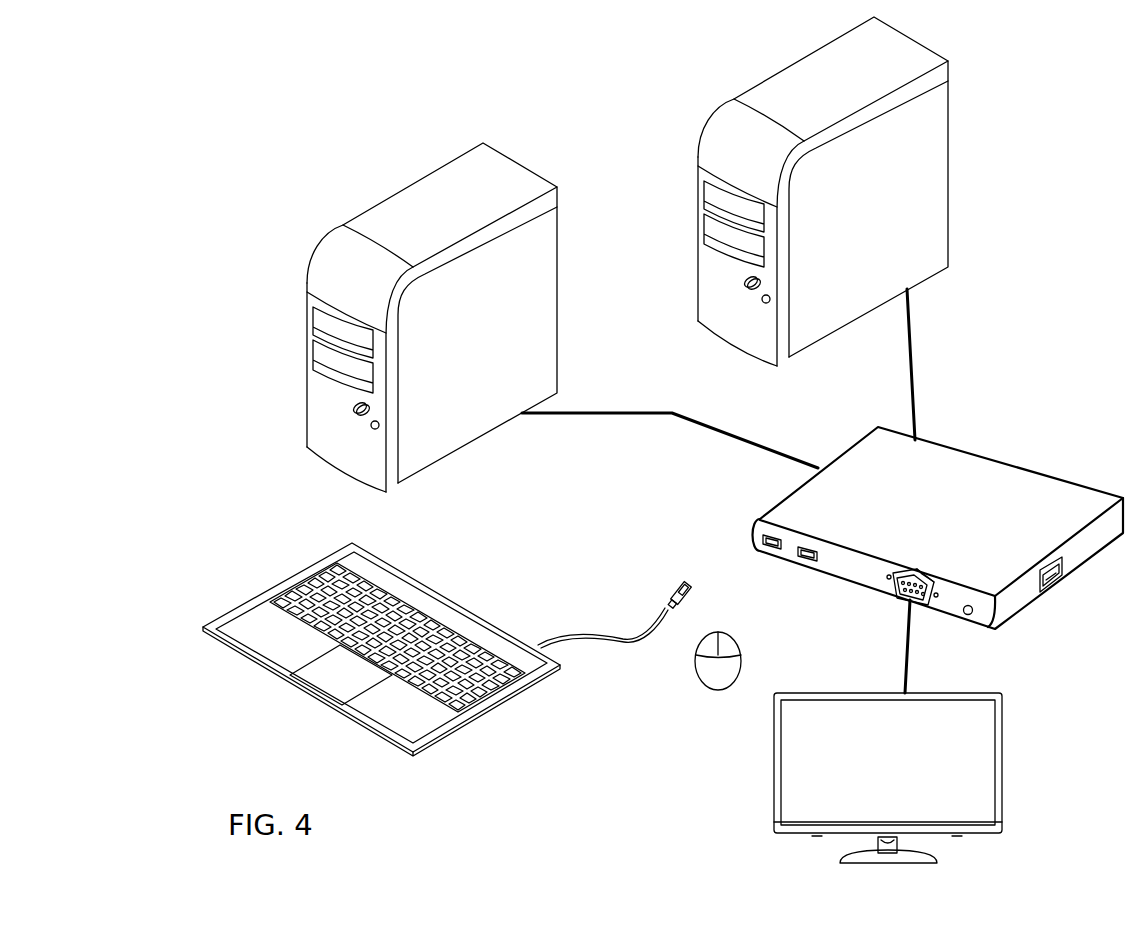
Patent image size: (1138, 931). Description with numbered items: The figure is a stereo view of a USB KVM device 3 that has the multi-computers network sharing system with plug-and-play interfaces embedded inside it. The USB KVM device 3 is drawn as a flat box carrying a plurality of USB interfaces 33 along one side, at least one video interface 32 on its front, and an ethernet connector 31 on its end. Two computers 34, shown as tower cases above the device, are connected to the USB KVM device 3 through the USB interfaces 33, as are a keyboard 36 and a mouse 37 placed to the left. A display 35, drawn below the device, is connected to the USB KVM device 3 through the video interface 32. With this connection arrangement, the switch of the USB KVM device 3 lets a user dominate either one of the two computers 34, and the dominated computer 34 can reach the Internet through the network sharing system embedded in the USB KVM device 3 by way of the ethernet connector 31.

The USB KVM device 3 is at (1028, 458).
The ethernet connector 31 is at (1062, 573).
The video interface 32 is at (920, 577).
The USB interfaces 33 is at (770, 549).
The computer 34 is at (486, 340).
The display 35 is at (904, 778).
The keyboard 36 is at (352, 682).
The mouse 37 is at (717, 684).